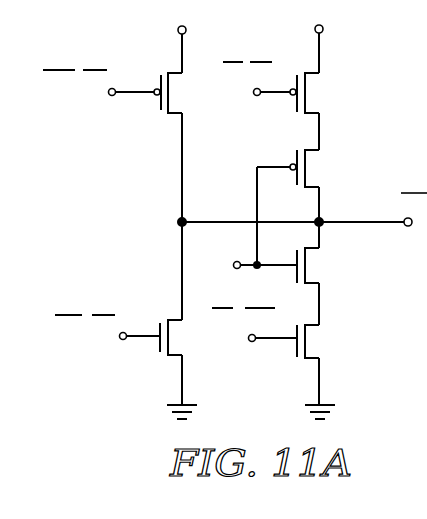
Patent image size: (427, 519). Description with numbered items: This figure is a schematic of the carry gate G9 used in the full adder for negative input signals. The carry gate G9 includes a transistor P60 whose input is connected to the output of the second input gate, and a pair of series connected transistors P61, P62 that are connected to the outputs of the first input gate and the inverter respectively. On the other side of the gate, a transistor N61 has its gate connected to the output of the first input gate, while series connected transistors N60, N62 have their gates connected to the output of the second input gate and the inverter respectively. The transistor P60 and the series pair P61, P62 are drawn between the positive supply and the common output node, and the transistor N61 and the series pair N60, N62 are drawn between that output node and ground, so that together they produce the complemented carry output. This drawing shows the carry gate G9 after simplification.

The carry gate G9 is at (371, 86).
The transistor P60 is at (131, 93).
The transistor P61 is at (290, 88).
The transistor P62 is at (306, 168).
The transistor N60 is at (285, 334).
The transistor N61 is at (118, 355).
The transistor N62 is at (282, 268).